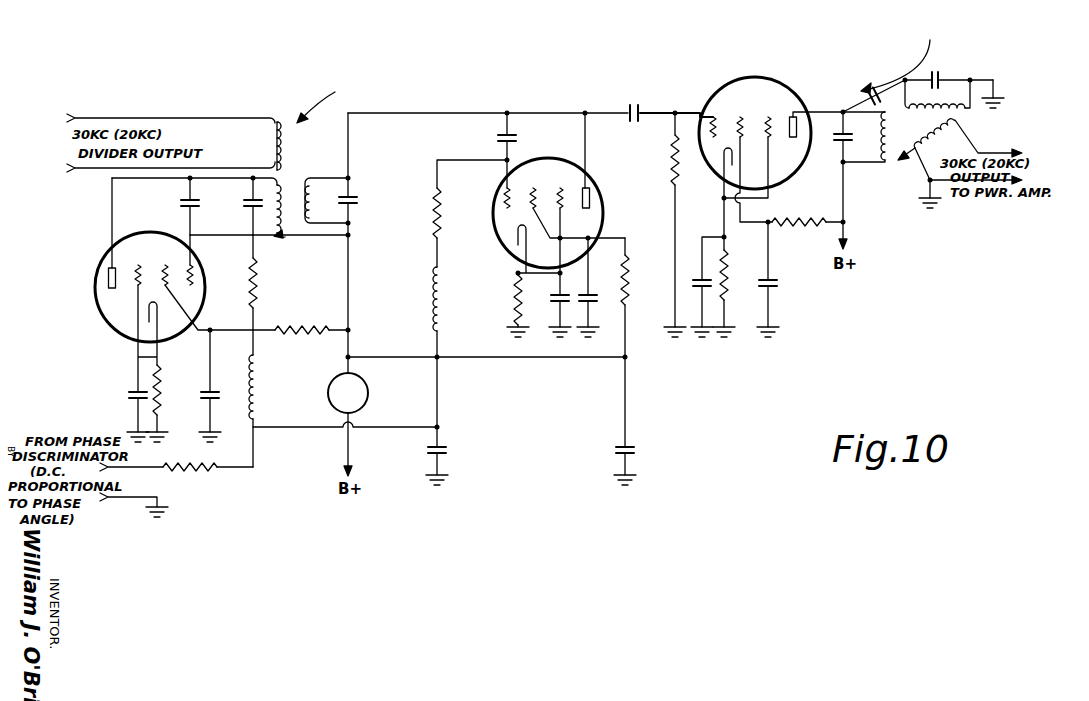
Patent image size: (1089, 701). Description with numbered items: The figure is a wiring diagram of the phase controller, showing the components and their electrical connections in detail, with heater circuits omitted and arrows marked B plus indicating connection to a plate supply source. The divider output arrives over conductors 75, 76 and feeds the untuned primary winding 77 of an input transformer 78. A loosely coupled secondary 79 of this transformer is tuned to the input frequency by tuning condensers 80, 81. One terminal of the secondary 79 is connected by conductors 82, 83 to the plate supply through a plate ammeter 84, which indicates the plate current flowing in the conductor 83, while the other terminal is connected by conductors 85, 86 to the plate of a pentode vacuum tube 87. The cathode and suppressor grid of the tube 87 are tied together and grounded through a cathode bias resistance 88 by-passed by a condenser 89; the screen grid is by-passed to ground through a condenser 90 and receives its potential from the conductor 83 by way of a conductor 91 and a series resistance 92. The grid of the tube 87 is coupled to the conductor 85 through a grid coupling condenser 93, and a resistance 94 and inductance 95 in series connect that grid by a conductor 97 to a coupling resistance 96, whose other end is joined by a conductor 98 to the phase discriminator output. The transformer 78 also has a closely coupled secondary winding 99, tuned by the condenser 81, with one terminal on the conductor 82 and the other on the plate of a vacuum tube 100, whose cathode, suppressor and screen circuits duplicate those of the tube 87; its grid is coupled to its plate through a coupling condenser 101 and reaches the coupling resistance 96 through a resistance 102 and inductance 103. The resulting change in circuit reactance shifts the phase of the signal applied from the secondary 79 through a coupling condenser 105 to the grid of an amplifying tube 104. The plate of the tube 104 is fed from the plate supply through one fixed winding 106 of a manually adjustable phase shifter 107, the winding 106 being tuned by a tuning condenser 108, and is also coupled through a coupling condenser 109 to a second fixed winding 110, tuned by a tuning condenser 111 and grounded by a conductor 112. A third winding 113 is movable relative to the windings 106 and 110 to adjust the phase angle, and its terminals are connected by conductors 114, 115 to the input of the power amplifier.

The conductor 75 is at (232, 118).
The conductor 76 is at (268, 165).
The untuned primary winding 77 is at (277, 118).
The input transformer 78 is at (321, 97).
The loosely coupled secondary 79 is at (308, 178).
The tuning condenser 80 is at (356, 200).
The tuning condenser 81 is at (242, 203).
The conductor 82 is at (350, 300).
The conductor 83 is at (350, 356).
The plate ammeter 84 is at (369, 390).
The conductor 85 is at (476, 113).
The conductor 86 is at (588, 128).
The vacuum tube 87 is at (604, 194).
The cathode bias resistance 88 is at (514, 296).
The condenser 89 is at (557, 313).
The condenser 90 is at (588, 295).
The conductor 91 is at (494, 358).
The series resistance 92 is at (626, 278).
The grid coupling condenser 93 is at (520, 138).
The resistance 94 is at (432, 222).
The inductance 95 is at (448, 286).
The coupling resistance 96 is at (198, 472).
The conductor 97 is at (282, 429).
The conductor 98 is at (158, 467).
The closely coupled secondary winding 99 is at (282, 241).
The vacuum tube 100 is at (95, 294).
The coupling condenser 101 is at (192, 205).
The resistance 102 is at (254, 284).
The inductance 103 is at (260, 367).
The amplifying tube 104 is at (789, 91).
The coupling condenser 105 is at (649, 106).
The fixed winding 106 is at (886, 168).
The phase shifter 107 is at (876, 87).
The tuning condenser 108 is at (840, 144).
The coupling condenser 109 is at (896, 58).
The second fixed winding 110 is at (970, 106).
The tuning condenser 111 is at (945, 75).
The conductor 112 is at (996, 82).
The third winding 113 is at (940, 134).
The conductor 114 is at (990, 152).
The conductor 115 is at (929, 196).